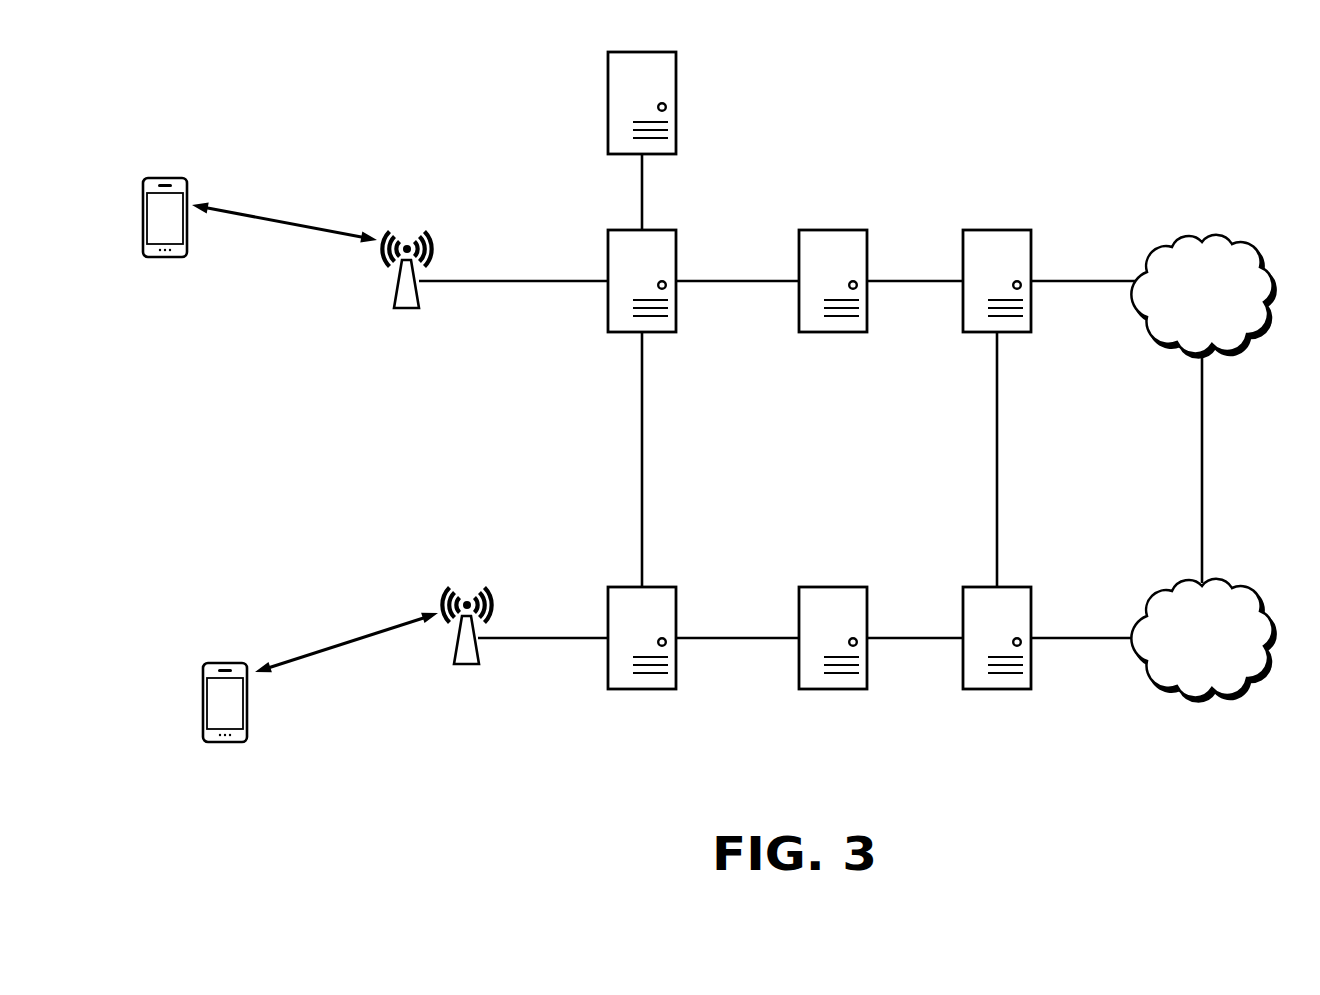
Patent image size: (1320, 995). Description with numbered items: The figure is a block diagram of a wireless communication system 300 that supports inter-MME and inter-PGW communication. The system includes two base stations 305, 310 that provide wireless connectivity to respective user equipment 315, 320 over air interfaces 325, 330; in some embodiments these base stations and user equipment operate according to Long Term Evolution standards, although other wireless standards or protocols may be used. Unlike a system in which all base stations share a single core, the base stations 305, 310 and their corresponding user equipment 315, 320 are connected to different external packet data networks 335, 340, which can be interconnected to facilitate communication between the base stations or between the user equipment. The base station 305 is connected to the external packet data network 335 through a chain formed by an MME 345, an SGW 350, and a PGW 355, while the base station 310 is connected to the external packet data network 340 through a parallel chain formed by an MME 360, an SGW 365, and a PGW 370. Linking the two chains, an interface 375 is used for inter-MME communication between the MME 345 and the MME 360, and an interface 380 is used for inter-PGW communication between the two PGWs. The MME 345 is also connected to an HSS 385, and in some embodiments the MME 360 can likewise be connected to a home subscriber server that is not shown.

The wireless communication system 300 is at (1192, 78).
The base station 305 is at (404, 311).
The base station 310 is at (463, 667).
The user equipment 315 is at (142, 204).
The user equipment 320 is at (200, 690).
The air interface 325 is at (314, 232).
The air interface 330 is at (363, 636).
The external packet data network 335 is at (1227, 237).
The external packet data network 340 is at (1227, 581).
The MME 345 is at (607, 257).
The SGW 350 is at (798, 257).
The PGW 355 is at (962, 257).
The MME 360 is at (607, 613).
The SGW 365 is at (798, 613).
The PGW 370 is at (962, 613).
The interface 375 is at (643, 458).
The interface 380 is at (998, 458).
The HSS 385 is at (607, 103).